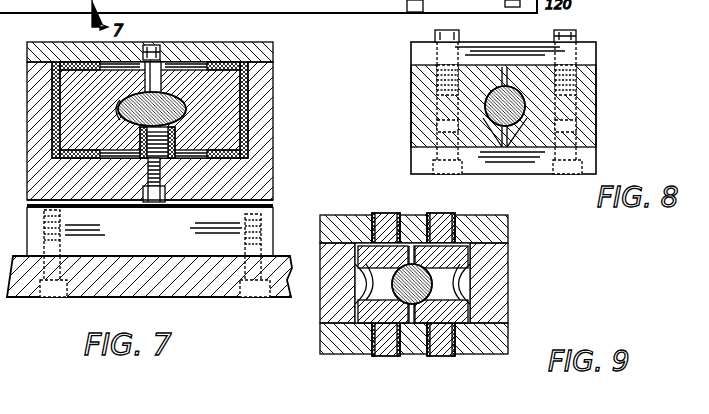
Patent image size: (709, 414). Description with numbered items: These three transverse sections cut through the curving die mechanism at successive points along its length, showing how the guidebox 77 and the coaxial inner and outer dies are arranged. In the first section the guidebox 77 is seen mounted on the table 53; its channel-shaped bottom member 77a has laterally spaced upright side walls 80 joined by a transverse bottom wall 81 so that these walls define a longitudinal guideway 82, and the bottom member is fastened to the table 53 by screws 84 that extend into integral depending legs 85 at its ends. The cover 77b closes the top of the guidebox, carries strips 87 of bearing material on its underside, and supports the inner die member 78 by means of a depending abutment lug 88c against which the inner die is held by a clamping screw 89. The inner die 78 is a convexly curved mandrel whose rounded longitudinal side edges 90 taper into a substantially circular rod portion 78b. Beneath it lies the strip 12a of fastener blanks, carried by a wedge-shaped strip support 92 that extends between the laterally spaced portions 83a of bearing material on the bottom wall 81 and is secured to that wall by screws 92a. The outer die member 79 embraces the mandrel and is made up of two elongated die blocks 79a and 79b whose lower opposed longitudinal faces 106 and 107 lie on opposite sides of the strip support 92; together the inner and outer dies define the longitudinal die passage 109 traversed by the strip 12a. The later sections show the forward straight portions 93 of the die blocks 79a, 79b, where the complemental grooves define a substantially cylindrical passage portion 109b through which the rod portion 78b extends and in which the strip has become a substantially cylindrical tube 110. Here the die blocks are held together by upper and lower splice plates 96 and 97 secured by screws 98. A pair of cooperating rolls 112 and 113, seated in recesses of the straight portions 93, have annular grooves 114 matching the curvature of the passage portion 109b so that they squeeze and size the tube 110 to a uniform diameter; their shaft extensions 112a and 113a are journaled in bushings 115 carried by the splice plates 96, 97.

In FIG. 7, the strip of fastener blanks 12a is at (122, 114).
In FIG. 7, the table 53 is at (130, 256).
In FIG. 7, the longitudinal guidebox 77 is at (284, 128).
In FIG. 7, the channel-shaped bottom member 77a is at (273, 172).
In FIG. 7, the cover 77b is at (224, 50).
In FIG. 7, the inner die member 78 is at (150, 110).
In FIG. 8, the rod portion 78b is at (480, 106).
In FIG. 9, the rod portion 78b is at (325, 300).
In FIG. 7, the outer die member 79 is at (248, 150).
In FIG. 8, the outer die member 79 is at (597, 124).
In FIG. 9, the outer die member 79 is at (508, 250).
In FIG. 7, the die block 79a is at (262, 70).
In FIG. 8, the die block 79a is at (597, 102).
In FIG. 9, the die block 79a is at (508, 280).
In FIG. 7, the die block 79b is at (57, 68).
In FIG. 8, the die block 79b is at (411, 95).
In FIG. 9, the die block 79b is at (330, 322).
In FIG. 7, the upright side walls 80 is at (257, 97).
In FIG. 7, the transverse bottom wall 81 is at (83, 205).
In FIG. 7, the longitudinal guideway 82 is at (252, 112).
In FIG. 7, the laterally spaced portions of bearing material 83a is at (80, 160).
In FIG. 7, the screws 84 is at (262, 216).
In FIG. 7, the integral depending legs 85 is at (278, 205).
In FIG. 7, the strips of bearing material 87 is at (218, 48).
In FIG. 7, the depending abutment lug 88c is at (110, 72).
In FIG. 7, the clamping screws 89 is at (77, 62).
In FIG. 7, the longitudinal side edges 90 is at (190, 98).
In FIG. 7, the strip support 92 is at (190, 118).
In FIG. 7, the screws 92a is at (168, 186).
In FIG. 8, the straight portions 93 is at (597, 70).
In FIG. 8, the upper splice plate 96 is at (597, 50).
In FIG. 9, the upper splice plate 96 is at (508, 234).
In FIG. 8, the lower splice plate 97 is at (597, 160).
In FIG. 9, the lower splice plate 97 is at (508, 336).
In FIG. 8, the screws 98 is at (578, 36).
In FIG. 7, the lower longitudinal face 106 is at (128, 140).
In FIG. 7, the lower longitudinal face 107 is at (180, 138).
In FIG. 7, the longitudinal die passage 109 is at (120, 104).
In FIG. 8, the cylindrical passage portion 109b is at (597, 86).
In FIG. 9, the cylindrical passage portion 109b is at (508, 306).
In FIG. 8, the tube 110 is at (508, 86).
In FIG. 9, the tube 110 is at (490, 272).
In FIG. 9, the roll 112 is at (474, 348).
In FIG. 8, the shaft extension 112a is at (446, 175).
In FIG. 9, the shaft extension 112a is at (441, 225).
In FIG. 9, the roll 113 is at (372, 330).
In FIG. 9, the shaft extension 113a is at (388, 204).
In FIG. 9, the annular grooves 114 is at (482, 286).
In FIG. 8, the bushings 115 is at (487, 208).
In FIG. 9, the bushings 115 is at (480, 218).